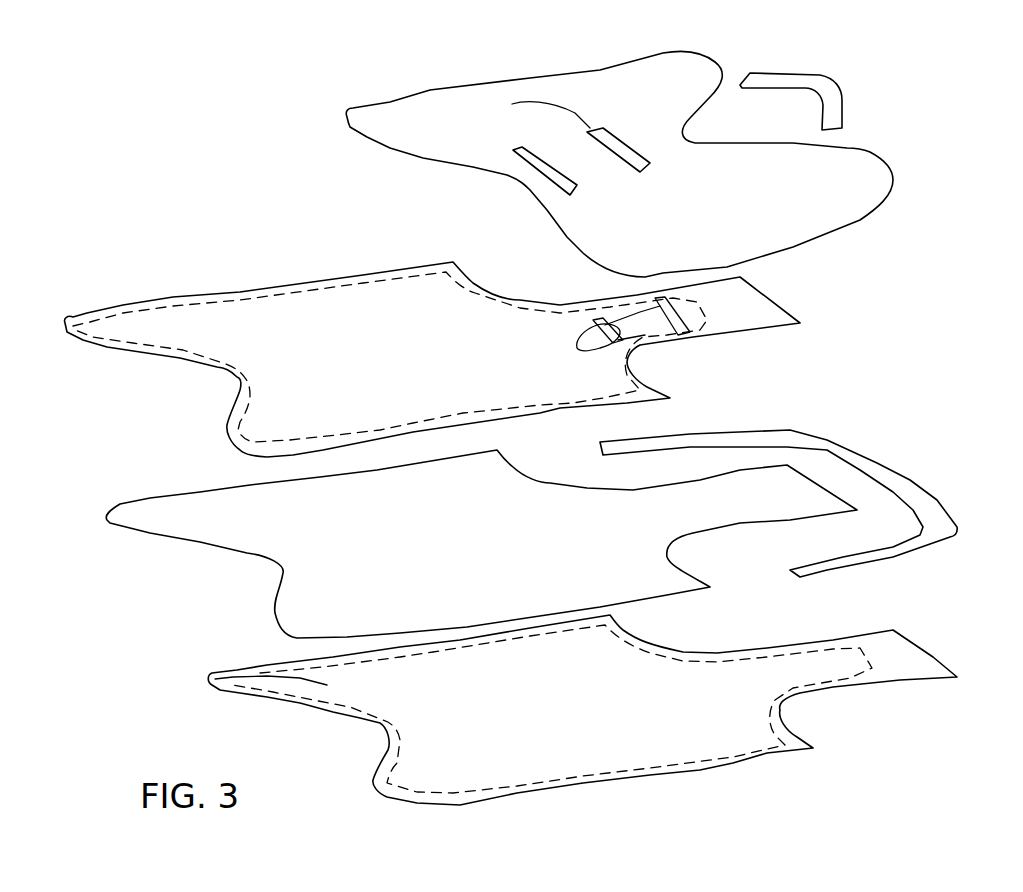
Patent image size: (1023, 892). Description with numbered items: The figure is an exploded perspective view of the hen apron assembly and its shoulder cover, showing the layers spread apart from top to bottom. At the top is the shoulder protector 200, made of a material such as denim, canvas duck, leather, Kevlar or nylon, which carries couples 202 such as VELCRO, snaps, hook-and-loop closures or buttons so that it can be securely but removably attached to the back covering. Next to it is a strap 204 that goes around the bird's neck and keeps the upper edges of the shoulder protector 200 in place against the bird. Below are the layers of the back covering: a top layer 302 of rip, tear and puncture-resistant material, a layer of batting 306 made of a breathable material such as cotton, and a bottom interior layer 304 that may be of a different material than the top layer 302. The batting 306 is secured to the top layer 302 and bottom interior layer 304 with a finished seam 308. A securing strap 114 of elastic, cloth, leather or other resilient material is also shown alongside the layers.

The securing strap 114 is at (829, 450).
The shoulder protector 200 is at (867, 177).
The couples 202 is at (522, 146).
The strap 204 is at (822, 78).
The top layer 302 is at (278, 327).
The bottom interior layer 304 is at (237, 673).
The layer of batting 306 is at (180, 510).
The finished seam 308 is at (127, 317).